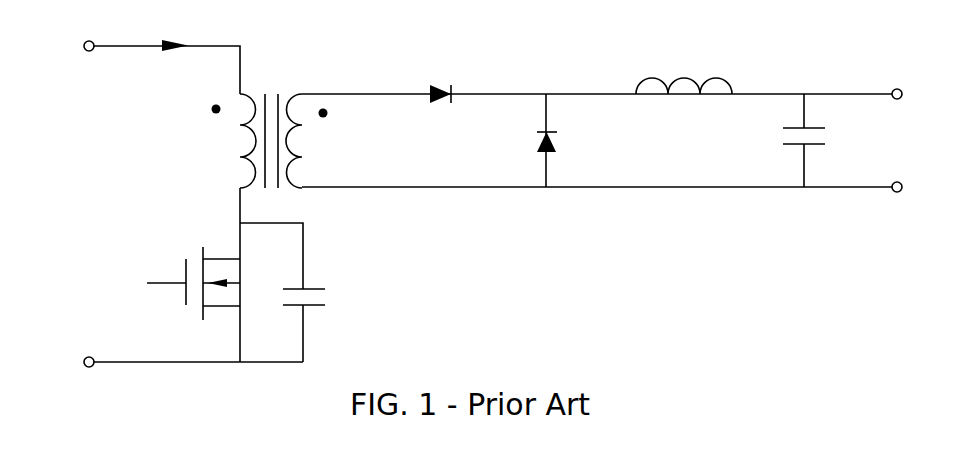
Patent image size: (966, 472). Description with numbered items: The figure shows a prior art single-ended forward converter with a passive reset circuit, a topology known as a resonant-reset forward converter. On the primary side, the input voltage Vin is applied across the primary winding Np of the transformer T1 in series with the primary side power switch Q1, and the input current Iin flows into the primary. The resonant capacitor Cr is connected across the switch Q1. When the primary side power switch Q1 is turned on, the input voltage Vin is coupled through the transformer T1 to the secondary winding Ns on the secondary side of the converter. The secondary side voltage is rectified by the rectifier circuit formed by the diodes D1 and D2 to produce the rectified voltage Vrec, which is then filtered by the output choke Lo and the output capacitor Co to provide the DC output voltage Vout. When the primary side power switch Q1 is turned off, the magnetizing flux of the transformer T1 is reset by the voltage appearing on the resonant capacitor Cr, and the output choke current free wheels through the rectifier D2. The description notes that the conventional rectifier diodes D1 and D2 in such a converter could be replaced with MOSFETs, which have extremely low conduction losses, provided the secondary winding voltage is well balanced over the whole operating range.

The input voltage Vin is at (95, 303).
The input current Iin is at (169, 62).
The transformer T1 is at (268, 121).
The primary winding Np is at (224, 141).
The secondary winding Ns is at (315, 141).
The rectifier diode D1 is at (445, 74).
The rectifier D2 is at (519, 140).
The rectified voltage Vrec is at (613, 168).
The output inductor Lo is at (684, 69).
The output capacitor Co is at (780, 140).
The DC output voltage Vout is at (916, 140).
The primary side power switch Q1 is at (193, 292).
The resonant capacitor Cr is at (326, 295).